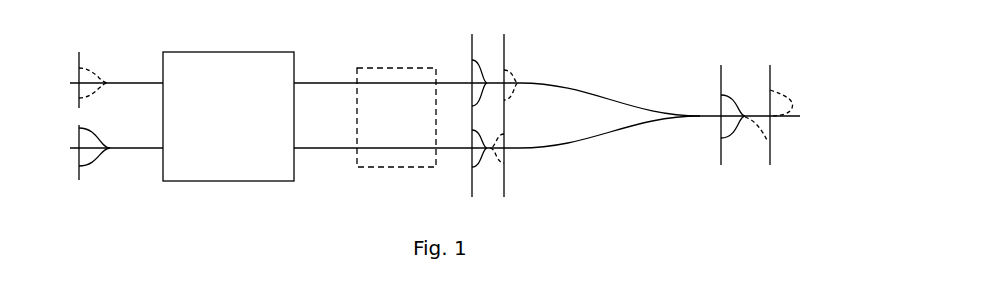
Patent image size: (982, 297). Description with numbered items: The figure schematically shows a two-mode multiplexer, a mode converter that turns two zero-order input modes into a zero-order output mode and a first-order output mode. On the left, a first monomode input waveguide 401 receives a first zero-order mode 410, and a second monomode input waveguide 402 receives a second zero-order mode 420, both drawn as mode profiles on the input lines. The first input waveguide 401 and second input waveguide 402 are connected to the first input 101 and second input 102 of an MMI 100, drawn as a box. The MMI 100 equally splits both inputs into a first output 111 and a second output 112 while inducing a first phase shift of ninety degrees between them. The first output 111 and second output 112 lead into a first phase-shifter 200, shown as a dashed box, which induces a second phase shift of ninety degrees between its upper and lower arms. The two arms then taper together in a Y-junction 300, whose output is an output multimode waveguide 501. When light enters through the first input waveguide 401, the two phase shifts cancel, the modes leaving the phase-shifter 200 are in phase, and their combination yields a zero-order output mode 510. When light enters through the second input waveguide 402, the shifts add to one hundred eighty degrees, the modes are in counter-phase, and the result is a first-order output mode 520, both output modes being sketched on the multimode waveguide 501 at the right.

The MMI 100 is at (209, 52).
The first input 101 is at (120, 148).
The second input 102 is at (120, 83).
The first output 111 is at (298, 83).
The second output 112 is at (298, 148).
The first phase-shifter 200 is at (373, 68).
The Y-junction 300 is at (590, 97).
The first monomode input waveguide 401 is at (75, 148).
The second monomode input waveguide 402 is at (75, 83).
The first zero-order mode 410 is at (79, 130).
The second zero-order mode 420 is at (79, 65).
The output multimode waveguide 501 is at (800, 116).
The zero-order output mode 510 is at (721, 72).
The first-order output mode 520 is at (772, 75).